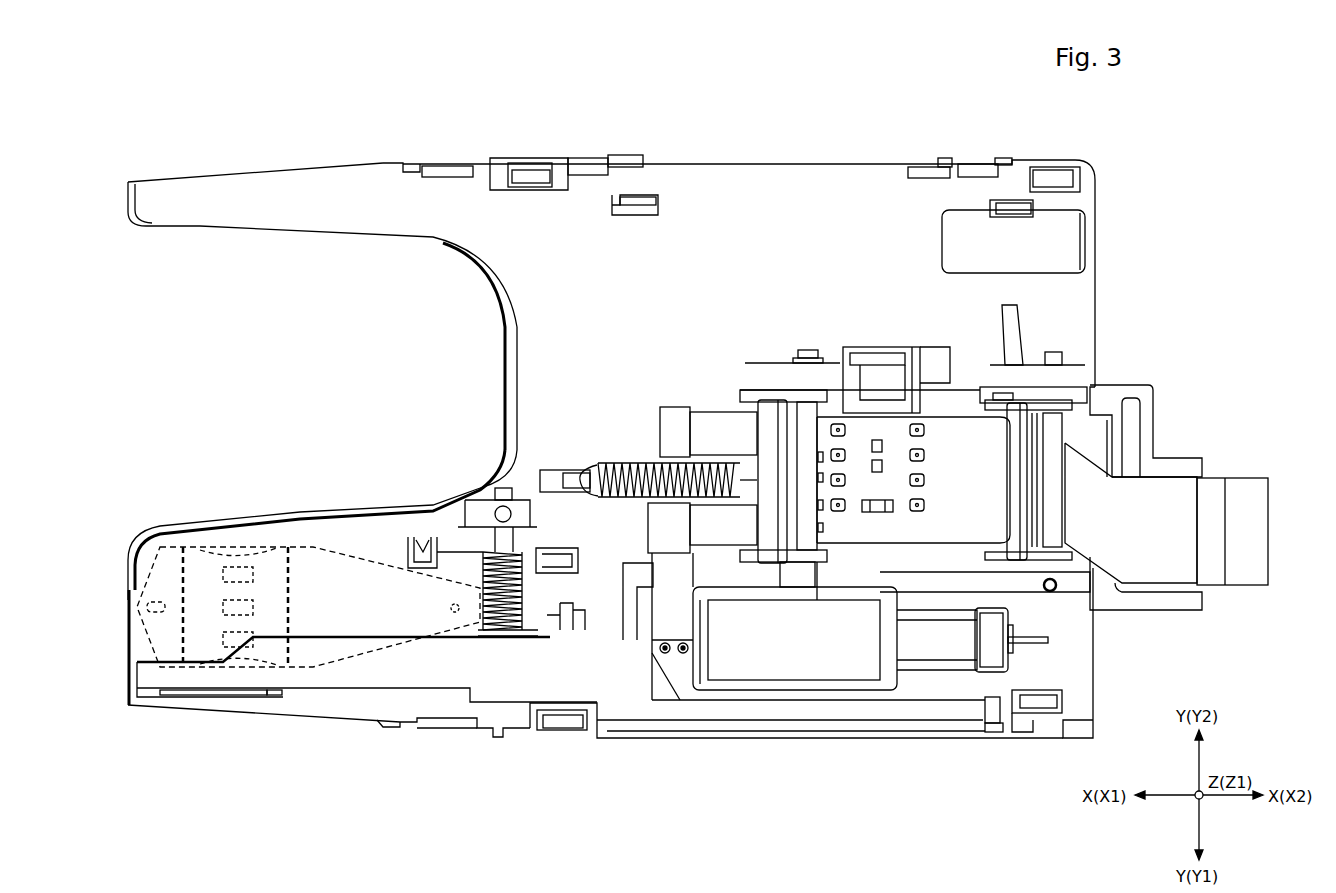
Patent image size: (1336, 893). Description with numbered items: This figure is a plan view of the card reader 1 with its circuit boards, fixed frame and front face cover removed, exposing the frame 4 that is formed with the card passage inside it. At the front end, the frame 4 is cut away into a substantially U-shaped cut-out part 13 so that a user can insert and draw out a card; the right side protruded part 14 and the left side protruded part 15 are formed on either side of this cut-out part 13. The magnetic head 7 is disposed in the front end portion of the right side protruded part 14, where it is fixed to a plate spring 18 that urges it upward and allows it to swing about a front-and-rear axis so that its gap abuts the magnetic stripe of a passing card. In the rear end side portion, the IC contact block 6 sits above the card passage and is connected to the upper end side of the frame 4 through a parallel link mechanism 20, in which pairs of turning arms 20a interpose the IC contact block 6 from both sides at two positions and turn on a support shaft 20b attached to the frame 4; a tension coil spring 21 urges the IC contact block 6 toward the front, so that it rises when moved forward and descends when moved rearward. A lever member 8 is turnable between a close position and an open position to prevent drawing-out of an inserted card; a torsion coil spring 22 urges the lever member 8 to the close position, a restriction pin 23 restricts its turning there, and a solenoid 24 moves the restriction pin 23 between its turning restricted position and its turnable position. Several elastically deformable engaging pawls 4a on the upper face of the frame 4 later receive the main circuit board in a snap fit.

The card reader 1 is at (1198, 121).
The frame 4 is at (769, 164).
The engaging pawls 4a is at (650, 195).
The IC contact block 6 is at (960, 410).
The magnetic head 7 is at (240, 547).
The lever member 8 is at (337, 717).
The cut-out part 13 is at (188, 372).
The right side protruded part 14 is at (225, 712).
The left side protruded part 15 is at (248, 180).
The plate spring 18 is at (363, 563).
The parallel link mechanism 20 is at (1055, 397).
The turning arms 20a is at (781, 397).
The support shaft 20b is at (808, 455).
The tension coil spring 21 is at (628, 467).
The torsion coil spring 22 is at (520, 585).
The restriction pin 23 is at (993, 730).
The solenoid 24 is at (787, 678).